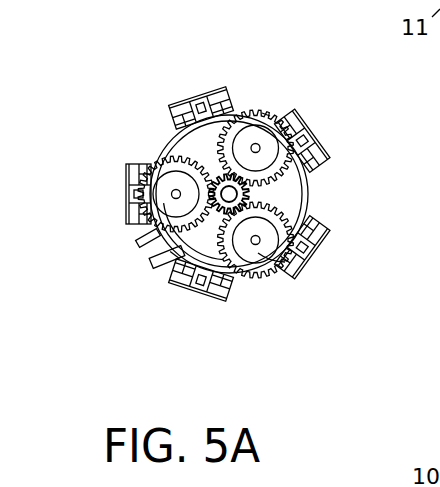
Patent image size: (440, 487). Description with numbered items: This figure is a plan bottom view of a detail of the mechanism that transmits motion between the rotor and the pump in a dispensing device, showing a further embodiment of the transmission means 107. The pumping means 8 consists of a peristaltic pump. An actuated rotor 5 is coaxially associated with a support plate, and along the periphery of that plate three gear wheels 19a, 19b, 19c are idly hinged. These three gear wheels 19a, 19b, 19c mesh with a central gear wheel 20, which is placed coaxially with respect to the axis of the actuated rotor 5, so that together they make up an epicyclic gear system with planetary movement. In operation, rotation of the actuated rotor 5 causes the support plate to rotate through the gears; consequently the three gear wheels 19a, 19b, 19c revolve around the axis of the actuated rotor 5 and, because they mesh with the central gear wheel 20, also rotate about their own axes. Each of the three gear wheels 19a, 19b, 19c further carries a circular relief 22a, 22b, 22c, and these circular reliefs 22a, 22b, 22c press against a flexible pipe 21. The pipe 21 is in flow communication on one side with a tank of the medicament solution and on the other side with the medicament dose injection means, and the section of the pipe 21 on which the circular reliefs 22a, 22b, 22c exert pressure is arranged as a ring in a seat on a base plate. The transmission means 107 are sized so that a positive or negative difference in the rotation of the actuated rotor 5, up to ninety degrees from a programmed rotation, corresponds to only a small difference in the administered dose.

The pumping means 8 is at (246, 90).
The actuated rotor 5 is at (167, 129).
The flexible pipe 21 is at (232, 302).
The transmission means 107 is at (285, 195).
The gear wheel 19a is at (283, 137).
The gear wheel 19b is at (158, 169).
The gear wheel 19c is at (288, 241).
The circular relief 22a is at (270, 118).
The circular relief 22b is at (145, 242).
The circular relief 22c is at (295, 276).
The gear wheel 20 is at (165, 260).